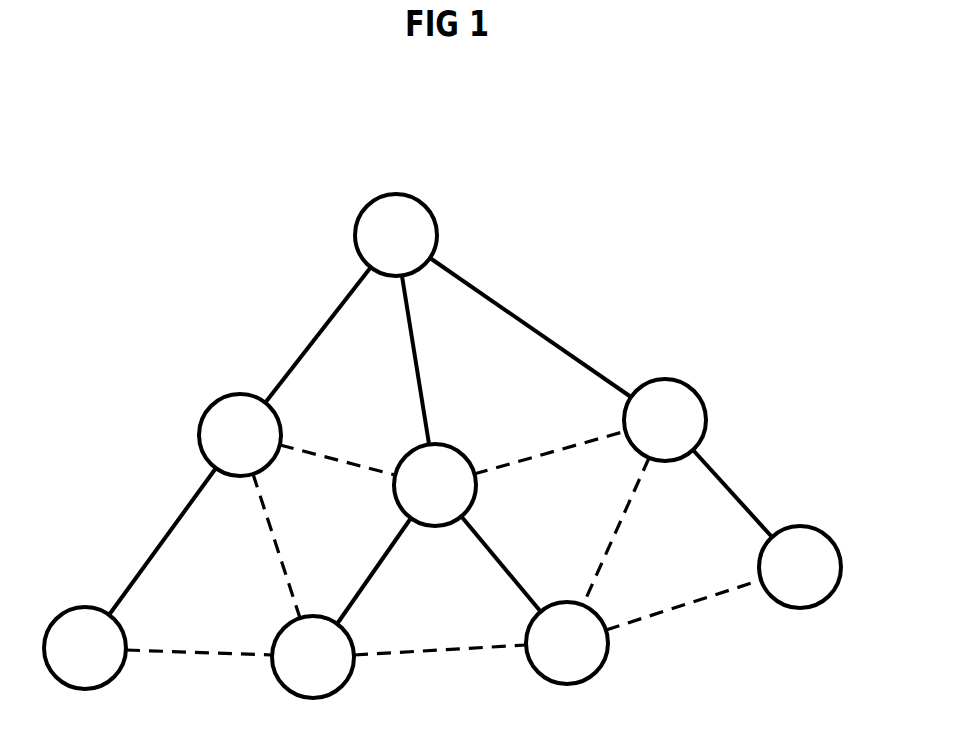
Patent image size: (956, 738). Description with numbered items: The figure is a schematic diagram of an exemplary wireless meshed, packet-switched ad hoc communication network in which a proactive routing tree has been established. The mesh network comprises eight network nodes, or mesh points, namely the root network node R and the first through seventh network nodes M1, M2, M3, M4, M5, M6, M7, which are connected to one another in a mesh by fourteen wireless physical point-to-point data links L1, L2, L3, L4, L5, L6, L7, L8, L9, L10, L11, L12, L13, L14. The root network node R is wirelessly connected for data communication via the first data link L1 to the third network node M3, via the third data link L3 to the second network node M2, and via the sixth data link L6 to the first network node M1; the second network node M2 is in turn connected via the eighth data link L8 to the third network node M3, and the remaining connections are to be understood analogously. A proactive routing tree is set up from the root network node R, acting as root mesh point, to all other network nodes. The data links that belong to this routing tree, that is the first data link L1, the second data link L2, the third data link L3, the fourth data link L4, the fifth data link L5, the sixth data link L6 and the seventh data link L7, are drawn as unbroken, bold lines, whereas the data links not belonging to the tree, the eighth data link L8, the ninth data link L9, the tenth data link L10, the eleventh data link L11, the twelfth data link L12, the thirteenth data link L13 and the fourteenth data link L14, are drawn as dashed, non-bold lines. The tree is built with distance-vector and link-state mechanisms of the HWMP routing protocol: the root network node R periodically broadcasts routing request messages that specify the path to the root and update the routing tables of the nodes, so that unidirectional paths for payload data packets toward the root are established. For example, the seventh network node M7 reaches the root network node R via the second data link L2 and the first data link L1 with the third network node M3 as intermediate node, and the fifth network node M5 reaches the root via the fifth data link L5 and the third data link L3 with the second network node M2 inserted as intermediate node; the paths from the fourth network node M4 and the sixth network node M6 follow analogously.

The root network node R is at (396, 235).
The first network node M1 is at (240, 435).
The second network node M2 is at (435, 485).
The third network node M3 is at (665, 420).
The fourth network node M4 is at (85, 648).
The fifth network node M5 is at (313, 657).
The sixth network node M6 is at (567, 643).
The seventh network node M7 is at (800, 567).
The first data link L1 is at (515, 316).
The second data link L2 is at (733, 487).
The third data link L3 is at (413, 343).
The fourth data link L4 is at (512, 553).
The fifth data link L5 is at (380, 575).
The sixth data link L6 is at (303, 367).
The seventh data link L7 is at (160, 560).
The eighth data link L8 is at (531, 454).
The ninth data link L9 is at (610, 543).
The tenth data link L10 is at (674, 612).
The eleventh data link L11 is at (433, 653).
The twelfth data link L12 is at (327, 463).
The thirteenth data link L13 is at (282, 573).
The fourteenth data link L14 is at (180, 652).